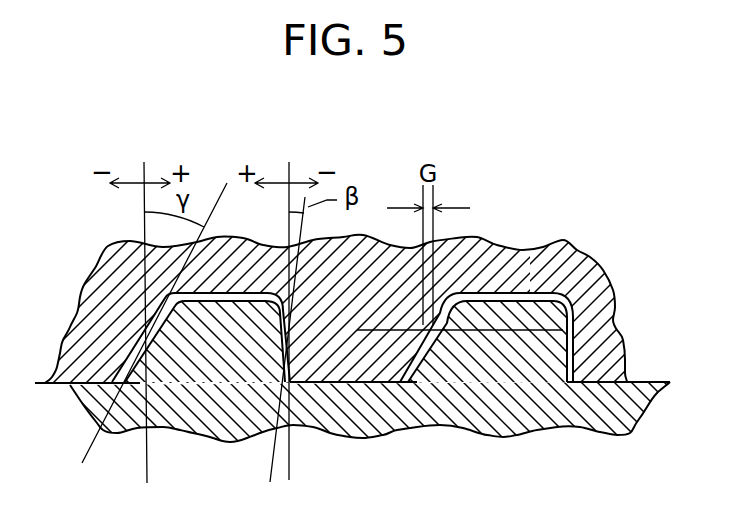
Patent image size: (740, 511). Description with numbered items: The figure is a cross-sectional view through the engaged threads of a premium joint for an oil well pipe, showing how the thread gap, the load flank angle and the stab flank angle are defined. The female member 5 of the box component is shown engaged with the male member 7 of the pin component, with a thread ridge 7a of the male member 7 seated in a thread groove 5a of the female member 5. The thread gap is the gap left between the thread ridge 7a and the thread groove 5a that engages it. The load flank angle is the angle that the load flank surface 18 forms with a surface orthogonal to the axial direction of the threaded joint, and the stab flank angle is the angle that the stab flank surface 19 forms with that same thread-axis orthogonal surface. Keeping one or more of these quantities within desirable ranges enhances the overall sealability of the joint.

The female member 5 is at (122, 310).
The thread groove 5a is at (483, 287).
The male member 7 is at (366, 416).
The thread ridge 7a is at (501, 351).
The load flank surface 18 is at (284, 330).
The stab flank surface 19 is at (158, 318).